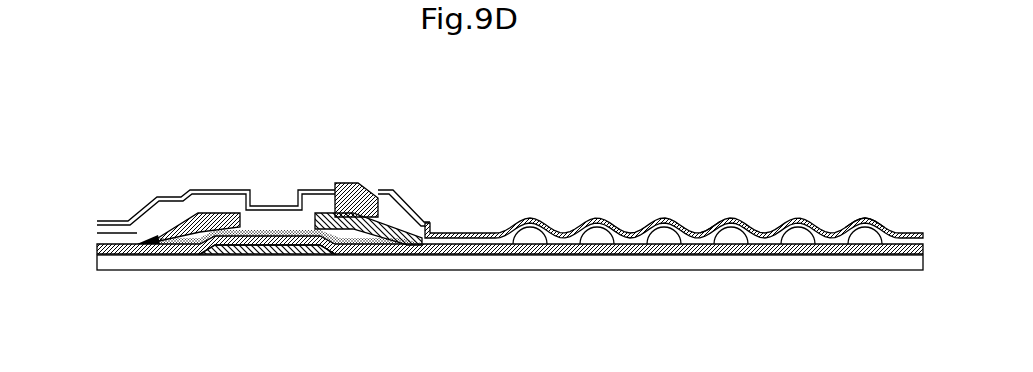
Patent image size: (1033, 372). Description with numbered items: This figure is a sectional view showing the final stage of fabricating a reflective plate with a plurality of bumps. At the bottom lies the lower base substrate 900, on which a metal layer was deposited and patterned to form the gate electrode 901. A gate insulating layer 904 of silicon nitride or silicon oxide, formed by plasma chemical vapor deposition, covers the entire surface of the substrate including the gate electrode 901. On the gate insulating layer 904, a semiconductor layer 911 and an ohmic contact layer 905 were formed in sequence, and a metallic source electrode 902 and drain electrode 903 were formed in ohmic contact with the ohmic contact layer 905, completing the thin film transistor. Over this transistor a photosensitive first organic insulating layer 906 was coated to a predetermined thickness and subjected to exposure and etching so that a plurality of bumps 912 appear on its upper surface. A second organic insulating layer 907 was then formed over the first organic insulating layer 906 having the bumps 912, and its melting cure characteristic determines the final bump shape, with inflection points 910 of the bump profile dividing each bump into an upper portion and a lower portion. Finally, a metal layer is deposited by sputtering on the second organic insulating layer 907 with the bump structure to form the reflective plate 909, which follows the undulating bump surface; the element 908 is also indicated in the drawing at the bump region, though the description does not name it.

The lower base substrate 900 is at (517, 263).
The gate electrode 901 is at (275, 253).
The source electrode 902 is at (218, 218).
The drain electrode 903 is at (326, 212).
The gate insulating layer 904 is at (433, 250).
The ohmic contact layer 905 is at (131, 227).
The first organic insulating layer 906 is at (192, 208).
The second organic insulating layer 907 is at (204, 190).
The organic light emitting layer 908 is at (880, 223).
The reflective plate 909 is at (863, 222).
The inflection points 910 is at (711, 228).
The semiconductor layer 911 is at (430, 223).
The bumps 912 is at (731, 228).